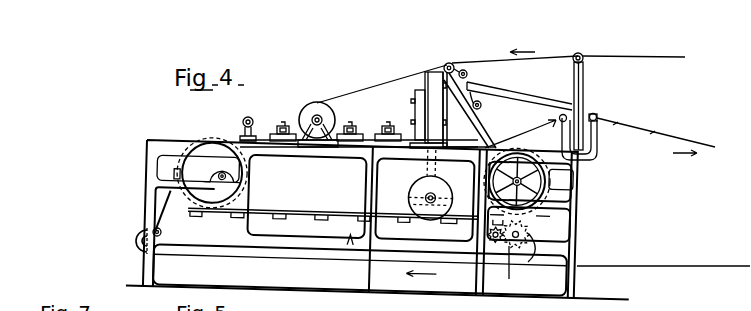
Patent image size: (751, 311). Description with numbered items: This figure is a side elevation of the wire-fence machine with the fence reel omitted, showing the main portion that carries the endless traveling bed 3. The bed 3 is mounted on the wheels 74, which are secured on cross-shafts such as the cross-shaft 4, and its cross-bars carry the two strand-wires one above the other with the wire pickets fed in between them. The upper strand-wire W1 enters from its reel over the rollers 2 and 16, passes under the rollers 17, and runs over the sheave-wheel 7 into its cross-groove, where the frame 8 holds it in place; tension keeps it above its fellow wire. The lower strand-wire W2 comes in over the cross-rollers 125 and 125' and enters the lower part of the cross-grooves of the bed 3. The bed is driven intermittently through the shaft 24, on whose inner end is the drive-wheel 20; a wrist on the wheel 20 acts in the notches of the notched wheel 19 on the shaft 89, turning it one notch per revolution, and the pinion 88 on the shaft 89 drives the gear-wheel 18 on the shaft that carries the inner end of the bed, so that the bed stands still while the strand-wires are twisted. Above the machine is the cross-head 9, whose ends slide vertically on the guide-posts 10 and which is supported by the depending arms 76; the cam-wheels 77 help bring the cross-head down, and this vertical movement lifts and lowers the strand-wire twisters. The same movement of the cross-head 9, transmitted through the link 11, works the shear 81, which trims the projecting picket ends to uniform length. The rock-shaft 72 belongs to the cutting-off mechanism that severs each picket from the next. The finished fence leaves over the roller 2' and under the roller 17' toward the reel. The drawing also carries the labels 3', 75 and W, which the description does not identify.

The roller 2 is at (509, 93).
The roller 2' is at (541, 132).
The endless traveling bed 3 is at (345, 172).
The rail 3' is at (520, 213).
The cross-shaft 4 is at (213, 180).
The sheave-wheel 7 is at (322, 109).
The frame 8 is at (283, 125).
The cross-head 9 is at (414, 96).
The guide-posts 10 is at (428, 110).
The link 11 is at (520, 82).
The roller 16 is at (584, 61).
The rollers 17 is at (468, 63).
The roller 17' is at (600, 102).
The gear-wheel 18 is at (540, 189).
The notched wheel 19 is at (531, 236).
The drive-wheel 20 is at (490, 238).
The shaft 24 is at (487, 242).
The rock-shaft 72 is at (243, 123).
The wheels 74 is at (500, 161).
The bearing 75 is at (561, 179).
The depending arms 76 is at (436, 176).
The cam-wheels 77 is at (446, 192).
The shear 81 is at (483, 99).
The pinion 88 is at (526, 252).
The shaft 89 is at (508, 269).
The cross-roller 125 is at (109, 241).
The cross-roller 125' is at (129, 223).
The wire W is at (686, 140).
The strand-wire W1 is at (654, 69).
The strand-wire W2 is at (145, 214).